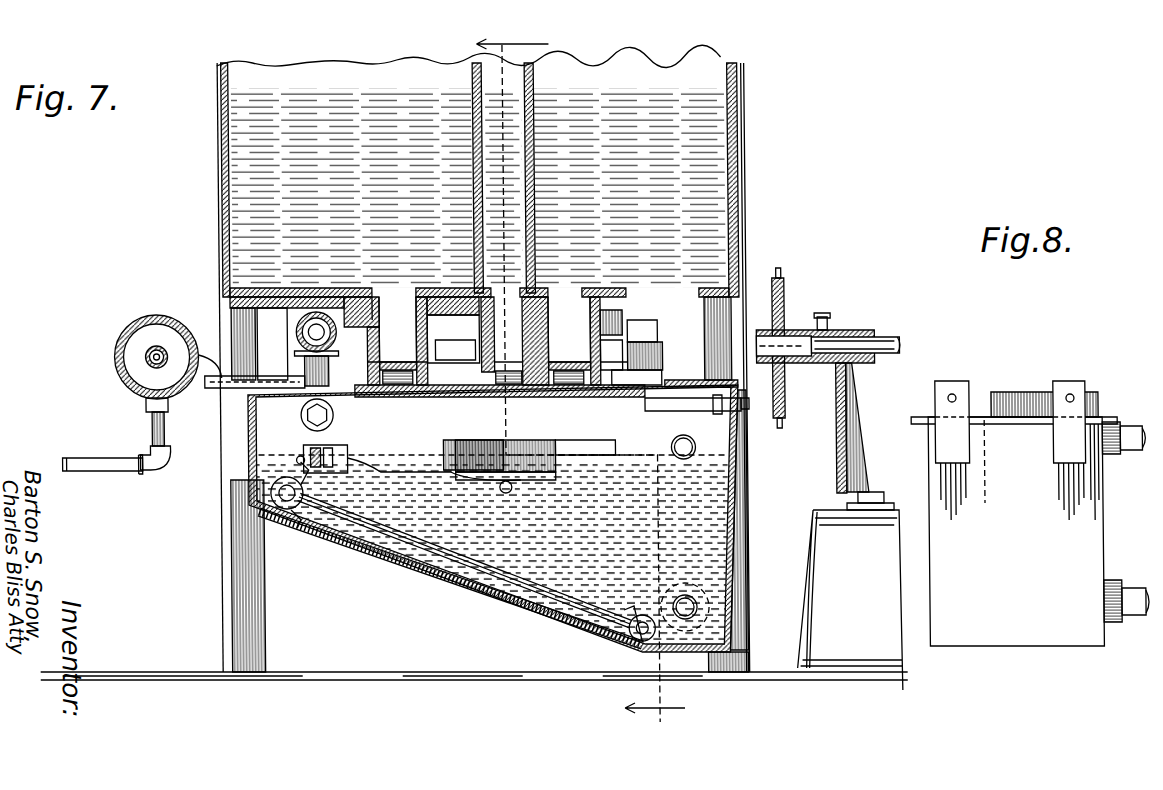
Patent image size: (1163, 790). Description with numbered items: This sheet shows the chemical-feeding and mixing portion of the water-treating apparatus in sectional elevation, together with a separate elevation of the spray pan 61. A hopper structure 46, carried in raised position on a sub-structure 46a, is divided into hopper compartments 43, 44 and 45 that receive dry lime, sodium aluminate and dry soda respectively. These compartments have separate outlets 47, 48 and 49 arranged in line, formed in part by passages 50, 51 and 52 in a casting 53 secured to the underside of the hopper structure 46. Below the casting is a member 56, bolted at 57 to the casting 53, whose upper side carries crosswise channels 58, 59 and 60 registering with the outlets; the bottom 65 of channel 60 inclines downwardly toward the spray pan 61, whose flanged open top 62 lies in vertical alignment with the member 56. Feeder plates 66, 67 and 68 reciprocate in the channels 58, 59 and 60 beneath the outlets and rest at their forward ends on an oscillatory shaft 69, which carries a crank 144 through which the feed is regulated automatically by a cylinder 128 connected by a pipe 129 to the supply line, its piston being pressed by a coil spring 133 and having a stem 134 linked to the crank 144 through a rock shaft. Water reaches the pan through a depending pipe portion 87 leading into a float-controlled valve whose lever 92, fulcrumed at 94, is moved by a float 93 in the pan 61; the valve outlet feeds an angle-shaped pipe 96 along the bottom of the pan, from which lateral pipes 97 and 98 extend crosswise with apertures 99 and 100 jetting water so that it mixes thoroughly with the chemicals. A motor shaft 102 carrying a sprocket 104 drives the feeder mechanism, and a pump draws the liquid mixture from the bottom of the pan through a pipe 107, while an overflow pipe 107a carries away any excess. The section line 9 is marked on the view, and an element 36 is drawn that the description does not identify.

In FIG. 7, the section line 9- 9 is at (580, 379).
In FIG. 7, the bearing 36 is at (305, 318).
In FIG. 7, the hopper compartment 43 is at (352, 188).
In FIG. 7, the hopper compartment 44 is at (500, 158).
In FIG. 7, the hopper compartment 45 is at (630, 188).
In FIG. 7, the hopper structure 46 is at (224, 169).
In FIG. 7, the sub-structure 46a is at (243, 620).
In FIG. 7, the outlet 47 is at (383, 297).
In FIG. 7, the outlet 48 is at (512, 300).
In FIG. 7, the outlet 49 is at (557, 305).
In FIG. 7, the passage 50 is at (402, 310).
In FIG. 7, the passage 51 is at (487, 298).
In FIG. 7, the passage 52 is at (596, 310).
In FIG. 7, the casting 53 is at (356, 298).
In FIG. 7, the member 56 is at (575, 397).
In FIG. 7, the bolt 57 is at (650, 378).
In FIG. 7, the channel 58 is at (440, 397).
In FIG. 7, the channel 59 is at (500, 397).
In FIG. 7, the channel 60 is at (612, 397).
In FIG. 7, the spray pan 61 is at (494, 518).
In FIG. 8, the spray pan 61 is at (1015, 531).
In FIG. 7, the flange 62 is at (640, 410).
In FIG. 8, the flange 62 is at (1015, 402).
In FIG. 7, the channel bottom 65 is at (395, 397).
In FIG. 7, the feeder plate 66 is at (397, 368).
In FIG. 7, the feeder plate 67 is at (420, 440).
In FIG. 7, the feeder plate 68 is at (569, 368).
In FIG. 7, the shaft 69 is at (696, 355).
In FIG. 7, the depending pipe portion 87 is at (256, 393).
In FIG. 7, the lever 92 is at (470, 485).
In FIG. 7, the float 93 is at (505, 460).
In FIG. 7, the fulcrum 94 is at (302, 456).
In FIG. 7, the angle-shaped pipe 96 is at (290, 462).
In FIG. 7, the lateral pipe 97 is at (270, 496).
In FIG. 7, the lateral pipe 98 is at (553, 615).
In FIG. 7, the apertures 99 is at (285, 512).
In FIG. 7, the apertures 100 is at (640, 645).
In FIG. 7, the motor shaft 102 is at (895, 337).
In FIG. 7, the sprocket 104 is at (785, 287).
In FIG. 7, the pipe 107 is at (695, 607).
In FIG. 8, the pipe 107 is at (1130, 615).
In FIG. 7, the overflow pipe 107a is at (695, 447).
In FIG. 8, the overflow pipe 107a is at (1126, 426).
In FIG. 7, the cylinder 128 is at (118, 345).
In FIG. 7, the pipe 129 is at (93, 462).
In FIG. 7, the coil spring 133 is at (152, 350).
In FIG. 7, the piston stem 134 is at (148, 360).
In FIG. 7, the crank 144 is at (668, 362).